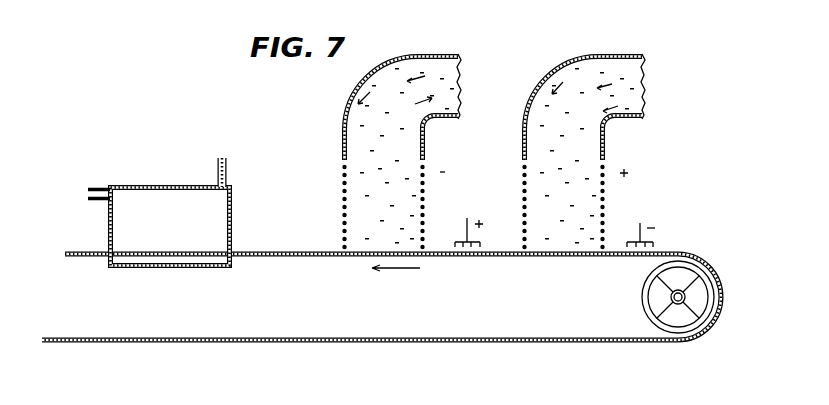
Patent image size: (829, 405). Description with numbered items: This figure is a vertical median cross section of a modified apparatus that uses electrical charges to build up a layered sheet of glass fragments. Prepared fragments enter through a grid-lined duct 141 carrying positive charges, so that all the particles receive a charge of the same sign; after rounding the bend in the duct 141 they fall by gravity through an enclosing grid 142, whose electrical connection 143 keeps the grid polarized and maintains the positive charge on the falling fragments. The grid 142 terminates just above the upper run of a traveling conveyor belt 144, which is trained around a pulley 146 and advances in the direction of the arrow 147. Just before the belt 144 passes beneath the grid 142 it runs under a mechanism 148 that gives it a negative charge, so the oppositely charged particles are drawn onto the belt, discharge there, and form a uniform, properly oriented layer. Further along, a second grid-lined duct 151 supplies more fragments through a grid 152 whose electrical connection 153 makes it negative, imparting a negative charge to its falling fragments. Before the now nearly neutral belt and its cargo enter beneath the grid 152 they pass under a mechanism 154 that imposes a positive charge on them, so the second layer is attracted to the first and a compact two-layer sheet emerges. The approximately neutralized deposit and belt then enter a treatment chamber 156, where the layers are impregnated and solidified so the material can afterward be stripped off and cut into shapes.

The grid-lined duct 141 is at (618, 53).
The enclosing grid 142 is at (603, 202).
The electrical connection 143 is at (602, 173).
The traveling conveyor belt 144 is at (608, 260).
The pulley 146 is at (709, 298).
The arrow 147 is at (410, 269).
The mechanism 148 is at (640, 232).
The second grid-lined duct 151 is at (427, 53).
The grid 152 is at (423, 202).
The electrical connection 153 is at (422, 172).
The mechanism 154 is at (467, 230).
The treatment chamber 156 is at (170, 223).